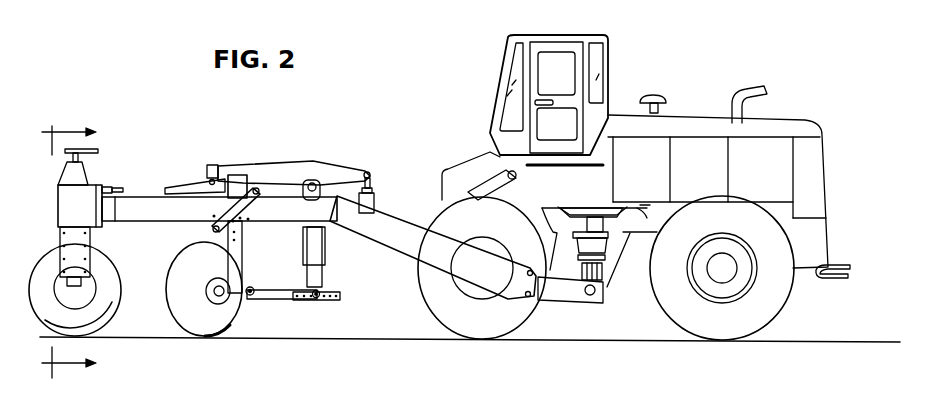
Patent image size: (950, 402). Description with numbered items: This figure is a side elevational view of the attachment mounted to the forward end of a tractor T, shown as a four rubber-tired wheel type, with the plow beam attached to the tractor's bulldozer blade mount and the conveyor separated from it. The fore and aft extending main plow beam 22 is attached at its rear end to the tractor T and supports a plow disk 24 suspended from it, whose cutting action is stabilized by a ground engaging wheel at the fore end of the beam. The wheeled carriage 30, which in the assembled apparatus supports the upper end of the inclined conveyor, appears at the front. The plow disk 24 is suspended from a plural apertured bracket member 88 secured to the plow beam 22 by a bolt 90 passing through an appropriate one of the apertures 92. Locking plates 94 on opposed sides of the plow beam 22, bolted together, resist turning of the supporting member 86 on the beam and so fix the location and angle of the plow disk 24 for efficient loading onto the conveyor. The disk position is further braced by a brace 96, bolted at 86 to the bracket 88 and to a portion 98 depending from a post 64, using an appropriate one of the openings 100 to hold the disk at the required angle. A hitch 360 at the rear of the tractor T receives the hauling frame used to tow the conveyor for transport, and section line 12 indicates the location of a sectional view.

The tractor T is at (616, 42).
The section line 12- 12 is at (68, 251).
The main plow beam 22 is at (266, 219).
The plow disk 24 is at (170, 292).
The wheeled carriage 30 is at (113, 275).
The post 64 is at (322, 268).
The supporting member 86 is at (263, 305).
The plural apertured bracket member 88 is at (242, 266).
The bolt 90 is at (228, 218).
The apertures 92 is at (252, 219).
The locking plates 94 is at (248, 176).
The brace 96 is at (283, 299).
The portion depending from post 98 is at (317, 300).
The openings 100 is at (303, 302).
The hitch 360 is at (840, 280).